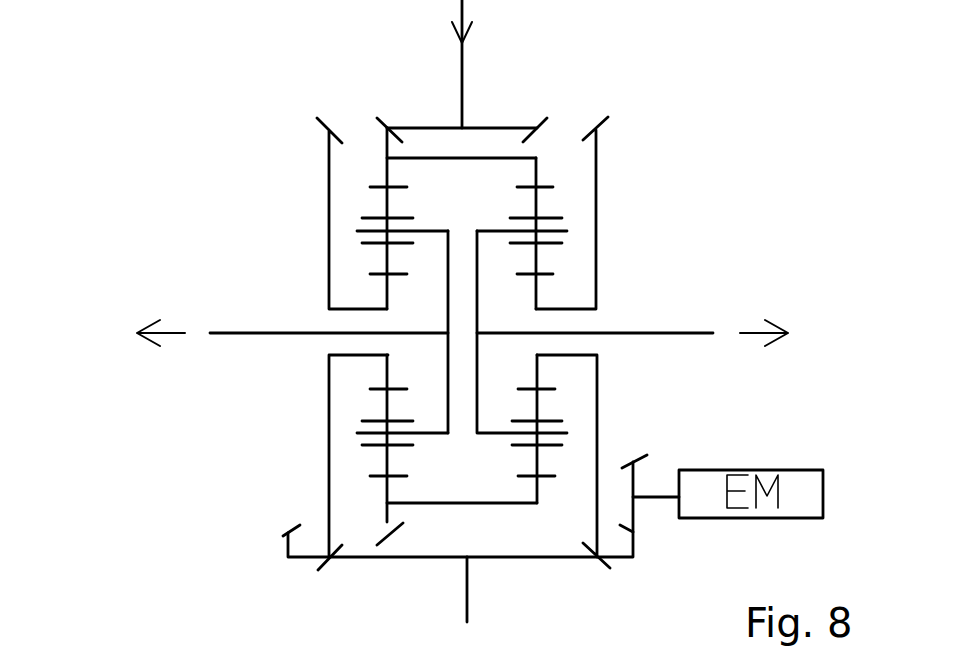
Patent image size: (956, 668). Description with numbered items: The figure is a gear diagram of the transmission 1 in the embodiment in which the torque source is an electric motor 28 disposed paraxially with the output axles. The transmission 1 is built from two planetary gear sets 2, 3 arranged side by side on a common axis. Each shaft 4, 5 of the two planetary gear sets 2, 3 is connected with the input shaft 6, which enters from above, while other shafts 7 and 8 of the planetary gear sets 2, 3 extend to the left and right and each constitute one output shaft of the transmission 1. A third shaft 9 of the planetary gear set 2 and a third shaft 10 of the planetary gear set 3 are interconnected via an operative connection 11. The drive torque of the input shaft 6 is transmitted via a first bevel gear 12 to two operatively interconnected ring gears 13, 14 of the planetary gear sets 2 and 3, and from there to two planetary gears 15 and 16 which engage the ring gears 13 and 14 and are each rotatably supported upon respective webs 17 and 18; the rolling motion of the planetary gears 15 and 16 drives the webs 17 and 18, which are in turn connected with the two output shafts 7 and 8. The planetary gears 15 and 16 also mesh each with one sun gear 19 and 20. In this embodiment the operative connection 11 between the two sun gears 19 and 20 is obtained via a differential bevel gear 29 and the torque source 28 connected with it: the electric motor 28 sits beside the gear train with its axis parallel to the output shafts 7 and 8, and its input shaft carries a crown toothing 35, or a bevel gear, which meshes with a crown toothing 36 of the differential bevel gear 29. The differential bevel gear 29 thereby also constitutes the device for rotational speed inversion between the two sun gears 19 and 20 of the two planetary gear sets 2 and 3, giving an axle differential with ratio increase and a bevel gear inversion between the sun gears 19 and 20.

The transmission 1 is at (110, 193).
The first planetary gear set 2 is at (320, 203).
The second planetary gear set 3 is at (620, 248).
The shaft of first planetary gear set 4 is at (378, 148).
The shaft of second planetary gear set 5 is at (545, 160).
The input shaft 6 is at (461, 60).
The output shaft 7 is at (220, 333).
The output shaft 8 is at (713, 333).
The third shaft of first planetary gear set 9 is at (317, 416).
The third shaft of second planetary gear set 10 is at (610, 446).
The operative connection 11 is at (362, 567).
The first bevel gear 12 is at (410, 128).
The ring gear of first planetary gear set 13 is at (388, 517).
The ring gear of second planetary gear set 14 is at (537, 490).
The planetary gear of first planetary gear set 15 is at (388, 407).
The planetary gear of second planetary gear set 16 is at (537, 408).
The web of first planetary gear set 17 is at (433, 435).
The web of second planetary gear set 18 is at (488, 435).
The sun gear of first planetary gear set 19 is at (387, 290).
The sun gear of second planetary gear set 20 is at (537, 290).
The torque source 28 is at (813, 467).
The differential bevel gear 29 is at (543, 558).
The crown toothing 35 is at (640, 535).
The crown toothing of differential bevel gear 36 is at (280, 537).